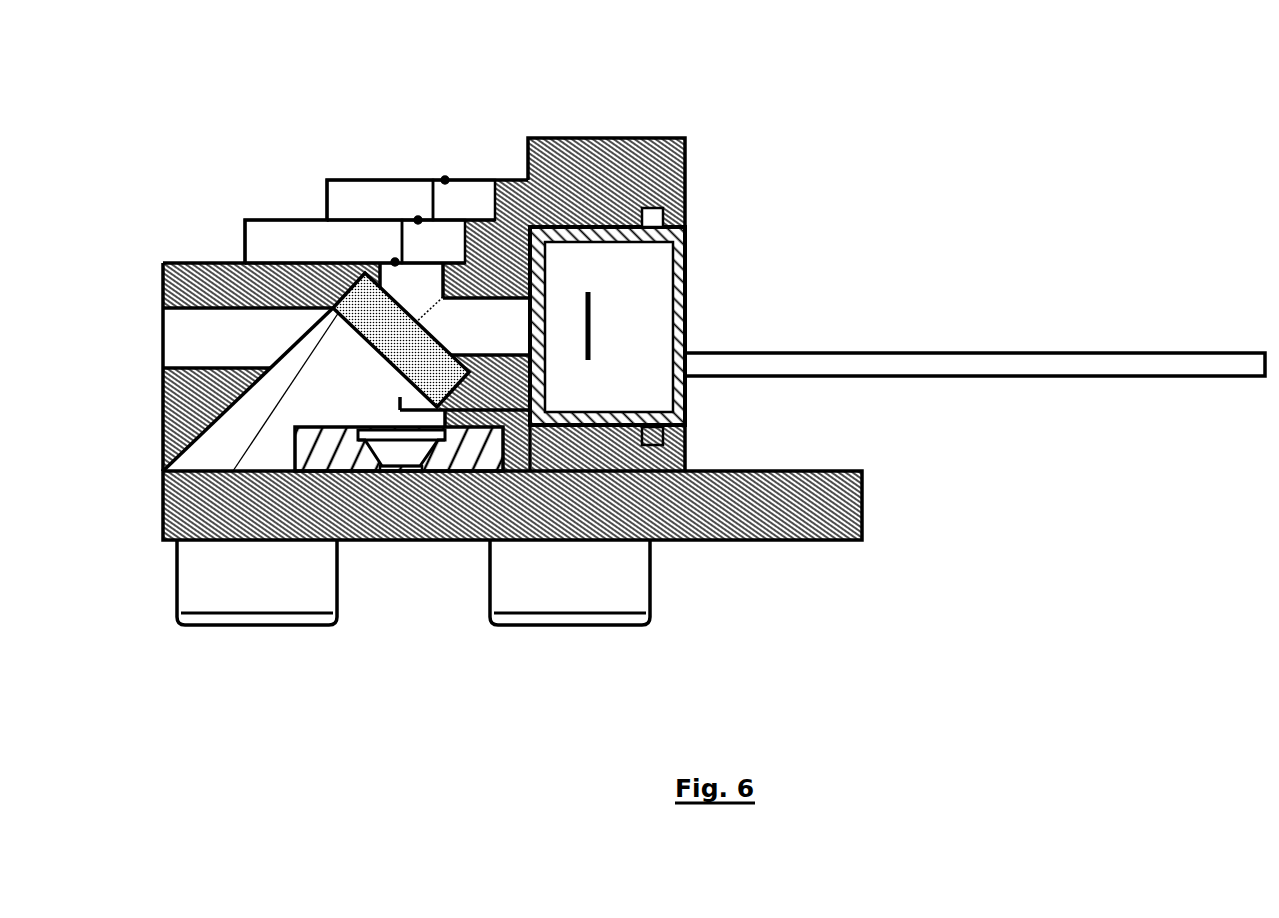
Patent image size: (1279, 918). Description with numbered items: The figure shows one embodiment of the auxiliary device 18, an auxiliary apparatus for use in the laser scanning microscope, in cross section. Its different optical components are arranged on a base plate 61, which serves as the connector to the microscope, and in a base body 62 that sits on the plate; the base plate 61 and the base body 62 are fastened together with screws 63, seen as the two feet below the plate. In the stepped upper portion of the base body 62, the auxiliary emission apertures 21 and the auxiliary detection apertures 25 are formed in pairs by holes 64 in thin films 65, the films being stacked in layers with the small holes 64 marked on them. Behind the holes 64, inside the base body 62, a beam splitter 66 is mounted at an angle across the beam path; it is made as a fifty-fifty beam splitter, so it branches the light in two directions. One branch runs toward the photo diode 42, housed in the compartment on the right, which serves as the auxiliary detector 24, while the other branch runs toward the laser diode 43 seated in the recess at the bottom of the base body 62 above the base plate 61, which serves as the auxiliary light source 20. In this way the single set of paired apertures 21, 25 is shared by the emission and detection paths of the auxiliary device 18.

The auxiliary device 18 is at (807, 115).
The auxiliary light source 20 is at (406, 561).
The laser diode 43 is at (438, 460).
The auxiliary emission apertures 21 is at (281, 139).
The auxiliary detection apertures 25 is at (281, 139).
The holes 64 is at (418, 220).
The films 65 is at (372, 180).
The beam splitter 66 is at (408, 346).
The auxiliary detector 24 is at (897, 305).
The photo diode 42 is at (685, 258).
The base body 62 is at (652, 457).
The base plate 61 is at (808, 518).
The screws 63 is at (242, 580).